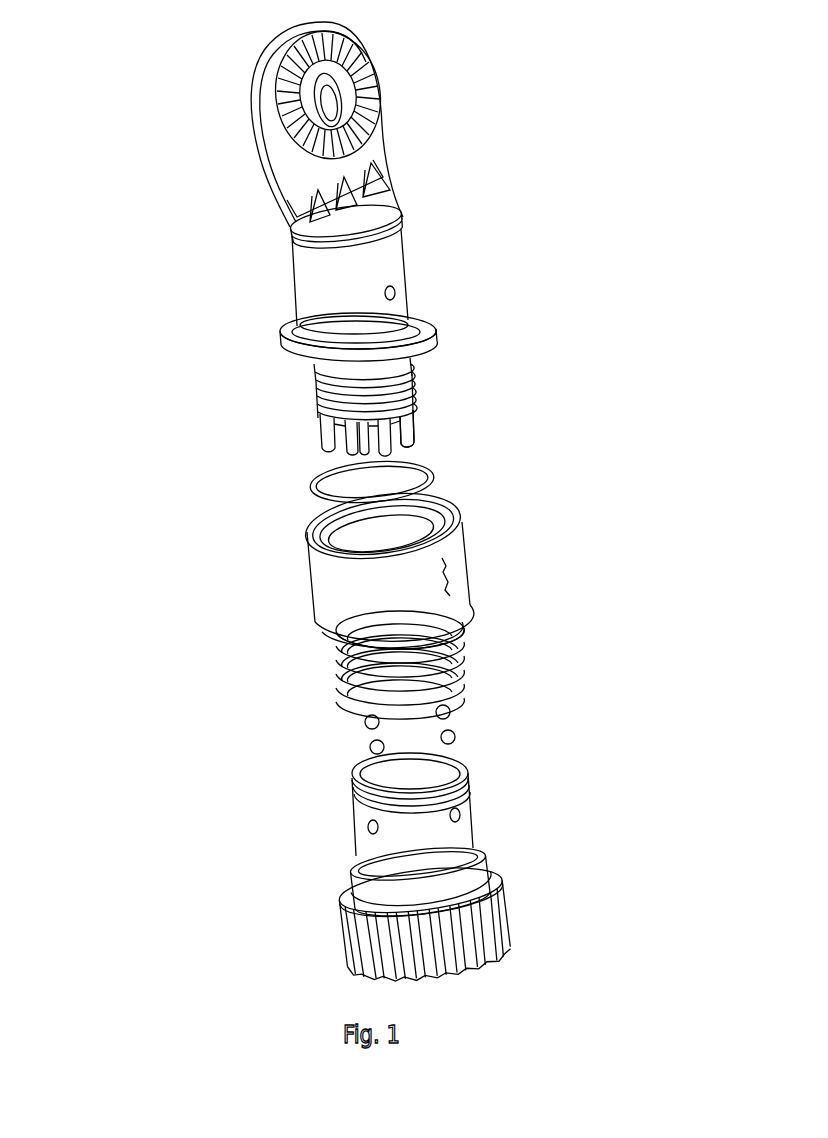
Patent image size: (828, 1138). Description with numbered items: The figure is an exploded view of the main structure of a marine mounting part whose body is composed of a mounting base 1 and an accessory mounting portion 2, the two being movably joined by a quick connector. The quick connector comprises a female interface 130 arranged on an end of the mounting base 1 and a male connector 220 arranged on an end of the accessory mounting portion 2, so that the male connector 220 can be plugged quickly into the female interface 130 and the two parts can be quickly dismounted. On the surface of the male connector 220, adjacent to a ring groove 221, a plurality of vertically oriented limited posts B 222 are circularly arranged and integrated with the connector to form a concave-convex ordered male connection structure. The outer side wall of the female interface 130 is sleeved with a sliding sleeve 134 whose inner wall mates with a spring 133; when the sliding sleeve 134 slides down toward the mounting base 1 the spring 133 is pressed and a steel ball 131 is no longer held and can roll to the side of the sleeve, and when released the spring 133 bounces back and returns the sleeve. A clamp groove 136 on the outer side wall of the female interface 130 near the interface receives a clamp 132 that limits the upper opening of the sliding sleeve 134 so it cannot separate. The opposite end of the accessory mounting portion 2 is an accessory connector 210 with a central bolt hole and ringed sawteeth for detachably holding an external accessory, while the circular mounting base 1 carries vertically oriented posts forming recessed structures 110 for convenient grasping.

The mounting base 1 is at (508, 932).
The accessory mounting portion 2 is at (245, 157).
The recessed structure 110 is at (398, 938).
The female interface 130 is at (475, 822).
The steel ball 131 is at (363, 721).
The clamp 132 is at (420, 490).
The spring 133 is at (443, 650).
The sliding sleeve 134 is at (380, 571).
The clamp groove 136 is at (417, 804).
The accessory connector 210 is at (378, 117).
The male connector 220 is at (320, 430).
The ring groove 221 is at (325, 383).
The limited post B 222 is at (413, 416).